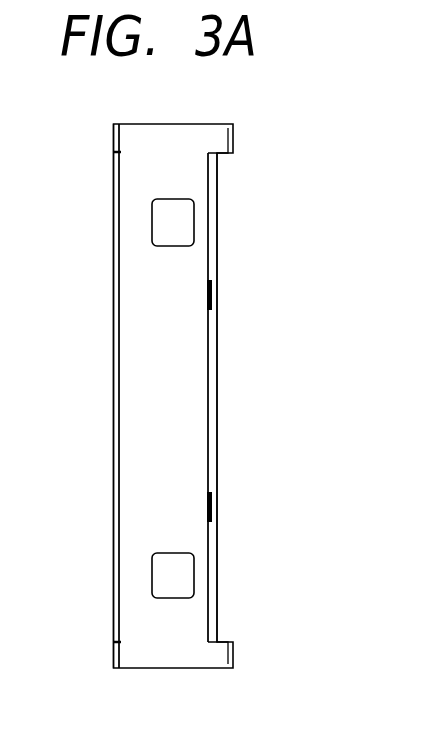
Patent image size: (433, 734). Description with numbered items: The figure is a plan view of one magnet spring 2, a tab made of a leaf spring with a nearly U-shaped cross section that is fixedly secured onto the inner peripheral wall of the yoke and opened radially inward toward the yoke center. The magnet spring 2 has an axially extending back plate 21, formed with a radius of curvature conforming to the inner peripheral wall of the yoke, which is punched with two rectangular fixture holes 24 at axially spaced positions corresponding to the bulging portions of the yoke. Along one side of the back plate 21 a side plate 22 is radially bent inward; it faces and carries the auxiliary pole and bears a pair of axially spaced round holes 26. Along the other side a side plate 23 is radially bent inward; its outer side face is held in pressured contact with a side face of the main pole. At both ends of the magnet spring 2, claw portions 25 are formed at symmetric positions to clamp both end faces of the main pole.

The magnet spring 2 is at (240, 441).
The back plate 21 is at (191, 365).
The side plate 22 is at (230, 585).
The side plate 23 is at (113, 430).
The fixture holes 24 is at (165, 232).
The claw portions 25 is at (113, 144).
The round holes 26 is at (213, 295).